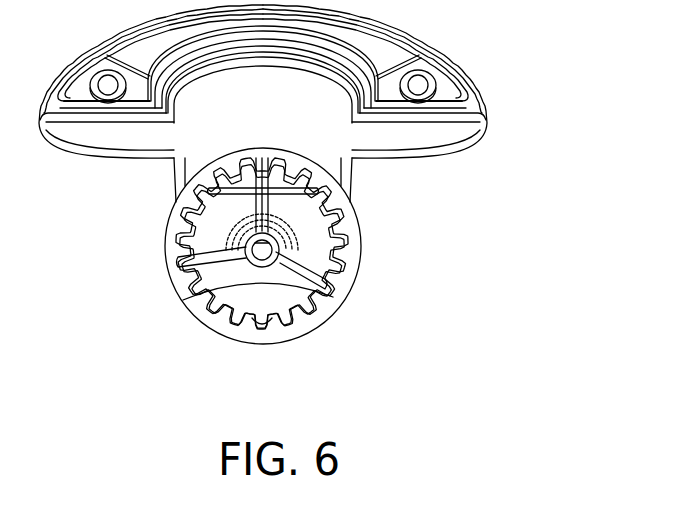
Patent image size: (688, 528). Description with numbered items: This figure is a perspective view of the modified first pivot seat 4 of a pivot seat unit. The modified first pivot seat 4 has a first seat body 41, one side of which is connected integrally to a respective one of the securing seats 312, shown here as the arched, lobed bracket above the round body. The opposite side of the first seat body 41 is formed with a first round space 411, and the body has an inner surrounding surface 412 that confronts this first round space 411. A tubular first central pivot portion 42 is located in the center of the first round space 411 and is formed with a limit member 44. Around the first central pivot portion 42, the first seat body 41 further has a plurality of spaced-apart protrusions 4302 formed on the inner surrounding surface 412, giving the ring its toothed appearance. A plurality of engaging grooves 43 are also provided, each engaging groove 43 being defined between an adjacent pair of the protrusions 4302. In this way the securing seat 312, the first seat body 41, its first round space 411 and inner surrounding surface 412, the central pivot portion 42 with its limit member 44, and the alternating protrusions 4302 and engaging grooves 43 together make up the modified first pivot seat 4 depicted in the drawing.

The securing seat 312 is at (473, 103).
The modified first pivot seat 4 is at (300, 273).
The first seat body 41 is at (340, 300).
The first round space 411 is at (303, 228).
The inner surrounding surface 412 is at (348, 258).
The first central pivot portion 42 is at (190, 299).
The engaging groove 43 is at (225, 292).
The limit member 44 is at (245, 216).
The protrusion 4302 is at (260, 325).